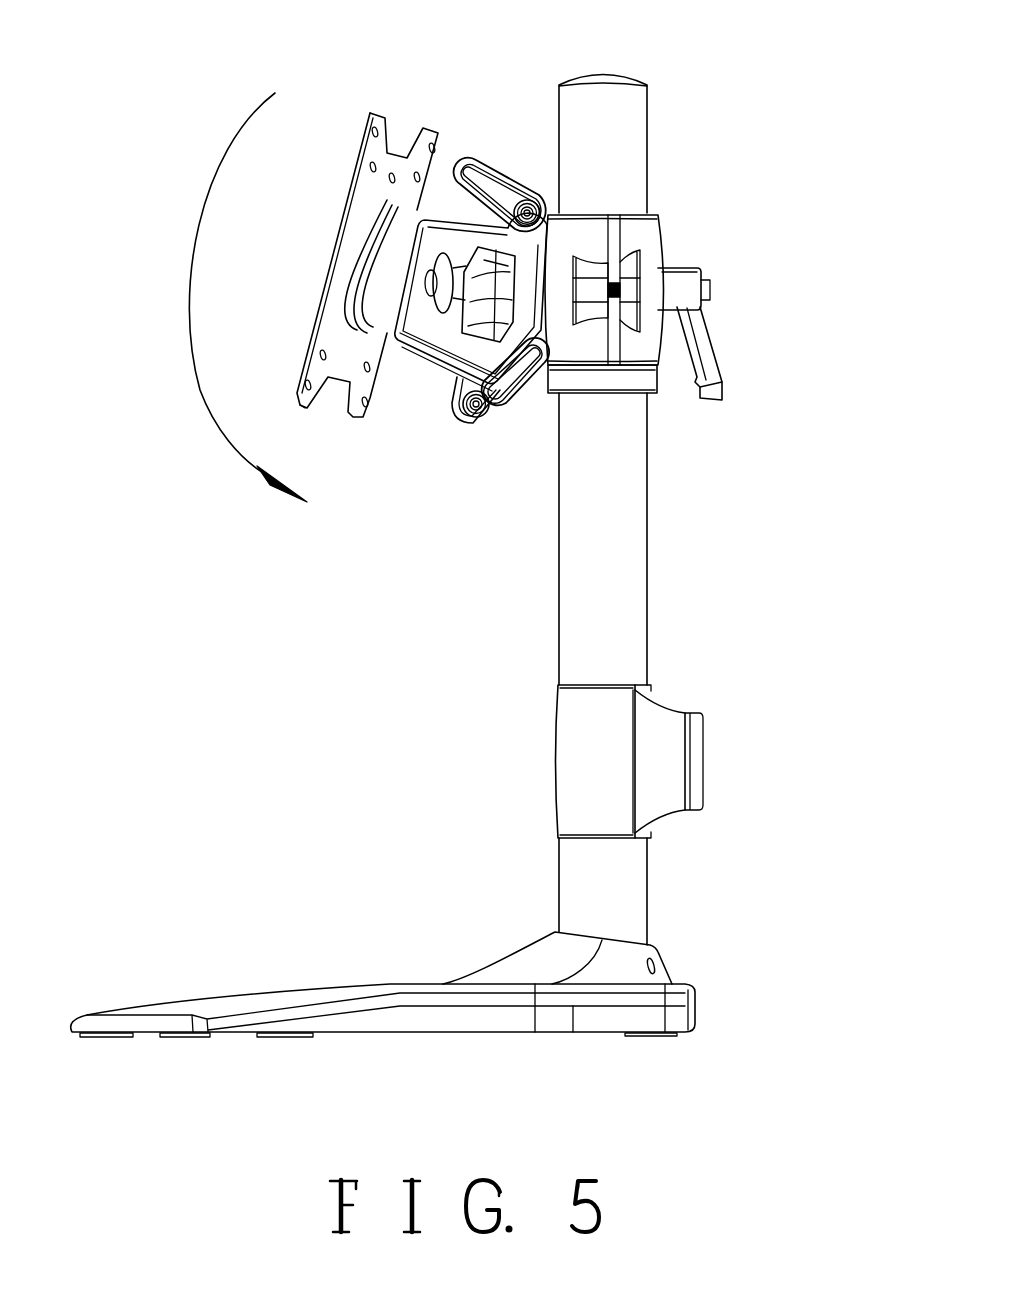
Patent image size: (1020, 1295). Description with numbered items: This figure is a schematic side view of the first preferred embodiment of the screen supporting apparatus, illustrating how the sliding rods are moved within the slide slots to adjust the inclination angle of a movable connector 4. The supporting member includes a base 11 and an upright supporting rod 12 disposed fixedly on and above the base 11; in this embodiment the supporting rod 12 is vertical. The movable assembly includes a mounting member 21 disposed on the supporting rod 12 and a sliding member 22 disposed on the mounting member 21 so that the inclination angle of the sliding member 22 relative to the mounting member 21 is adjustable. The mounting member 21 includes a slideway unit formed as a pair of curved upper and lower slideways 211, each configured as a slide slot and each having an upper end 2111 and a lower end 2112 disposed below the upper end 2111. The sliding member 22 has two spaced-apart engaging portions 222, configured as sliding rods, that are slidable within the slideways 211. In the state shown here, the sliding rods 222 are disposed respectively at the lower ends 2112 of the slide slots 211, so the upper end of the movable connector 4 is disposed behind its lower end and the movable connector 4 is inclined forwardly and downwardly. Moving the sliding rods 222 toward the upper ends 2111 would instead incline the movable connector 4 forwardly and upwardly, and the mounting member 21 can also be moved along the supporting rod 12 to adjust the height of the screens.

The base 11 is at (460, 996).
The supporting rod 12 is at (623, 597).
The mounting member 21 is at (653, 247).
The slideway 211 is at (562, 299).
The upper end 2111 is at (470, 173).
The lower end 2112 is at (490, 433).
The sliding member 22 is at (452, 381).
The engaging portions 222 is at (527, 200).
The movable connector 4 is at (342, 356).